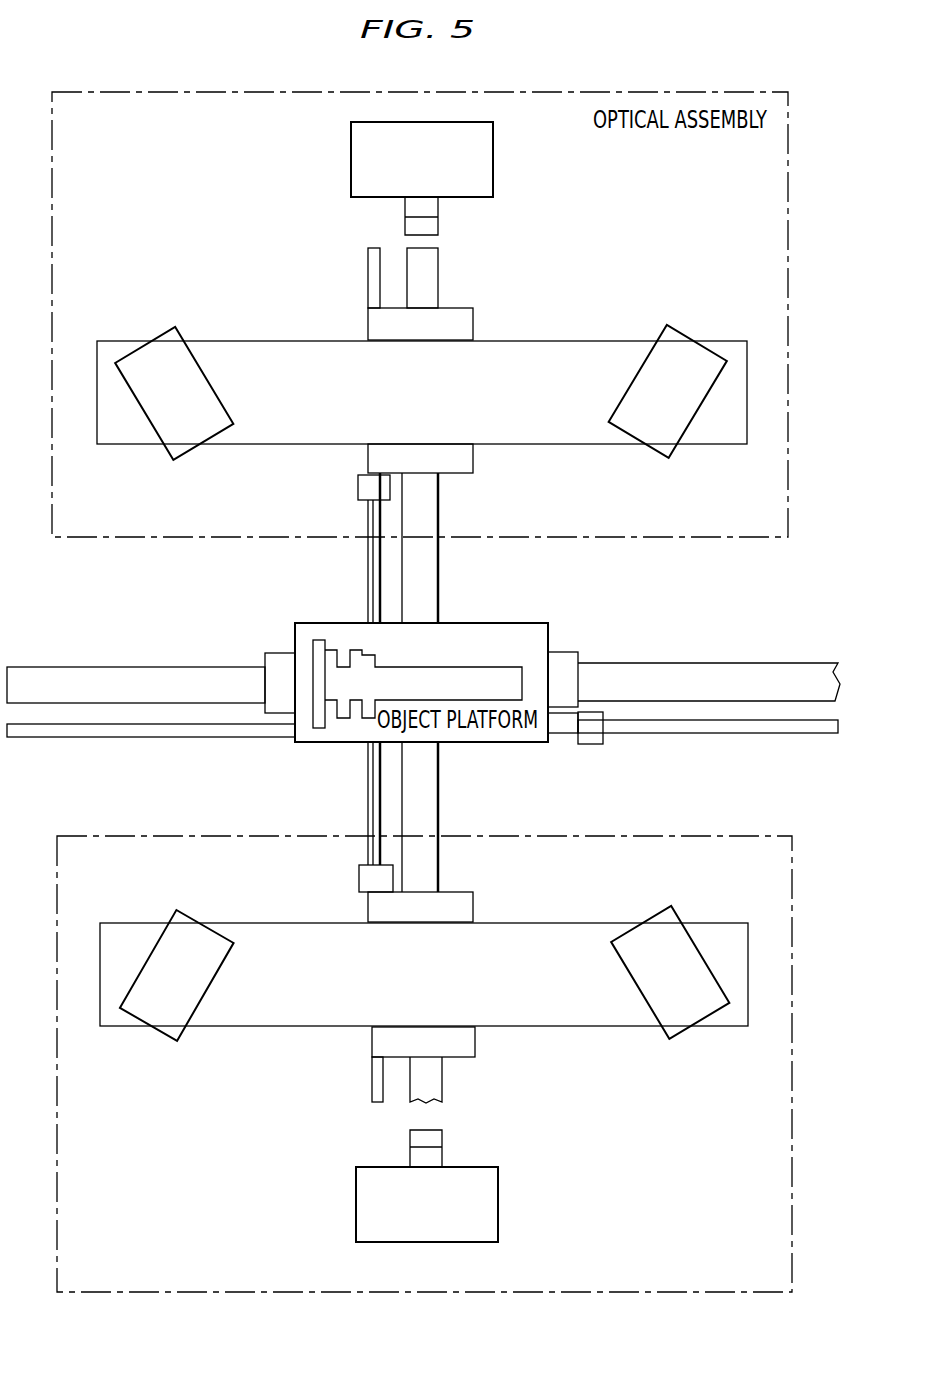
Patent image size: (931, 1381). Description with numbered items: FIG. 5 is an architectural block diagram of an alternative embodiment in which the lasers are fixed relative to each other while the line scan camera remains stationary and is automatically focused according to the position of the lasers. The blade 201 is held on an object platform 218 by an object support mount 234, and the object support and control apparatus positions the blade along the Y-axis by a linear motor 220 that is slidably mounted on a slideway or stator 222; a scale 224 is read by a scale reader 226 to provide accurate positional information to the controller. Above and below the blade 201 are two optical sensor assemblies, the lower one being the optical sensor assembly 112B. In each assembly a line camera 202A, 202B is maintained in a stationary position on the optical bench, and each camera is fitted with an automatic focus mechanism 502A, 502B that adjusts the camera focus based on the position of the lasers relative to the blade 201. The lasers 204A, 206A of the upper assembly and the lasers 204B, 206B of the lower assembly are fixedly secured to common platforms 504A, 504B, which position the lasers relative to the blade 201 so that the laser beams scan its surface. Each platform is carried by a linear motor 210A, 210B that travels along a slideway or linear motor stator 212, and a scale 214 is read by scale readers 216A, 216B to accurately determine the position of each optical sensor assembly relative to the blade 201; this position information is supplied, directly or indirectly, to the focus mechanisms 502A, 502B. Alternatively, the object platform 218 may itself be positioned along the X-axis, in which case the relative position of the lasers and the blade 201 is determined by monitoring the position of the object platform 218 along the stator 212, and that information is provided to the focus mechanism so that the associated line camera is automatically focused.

The line camera 202A is at (350, 157).
The automatic focus mechanism 502A is at (433, 228).
The linear motor 210A is at (373, 325).
The laser 204A is at (222, 403).
The laser 206A is at (618, 396).
The common platform 504A is at (700, 444).
The scale reader 216A is at (358, 490).
The scale 214 is at (372, 557).
The linear motor stator 212 is at (425, 557).
The blade 201 is at (450, 665).
The object support mount 234 is at (318, 730).
The linear motor 220 is at (283, 653).
The stator 222 is at (750, 663).
The scale 224 is at (773, 742).
The scale reader 226 is at (590, 746).
The object platform 218 is at (468, 745).
The optical sensor assembly 112B is at (702, 836).
The scale reader 216B is at (358, 880).
The laser 204B is at (207, 1000).
The laser 206B is at (628, 986).
The common platform 504B is at (725, 1027).
The linear motor 210B is at (478, 1043).
The automatic focus mechanism 502B is at (437, 1140).
The line camera 202B is at (430, 1244).